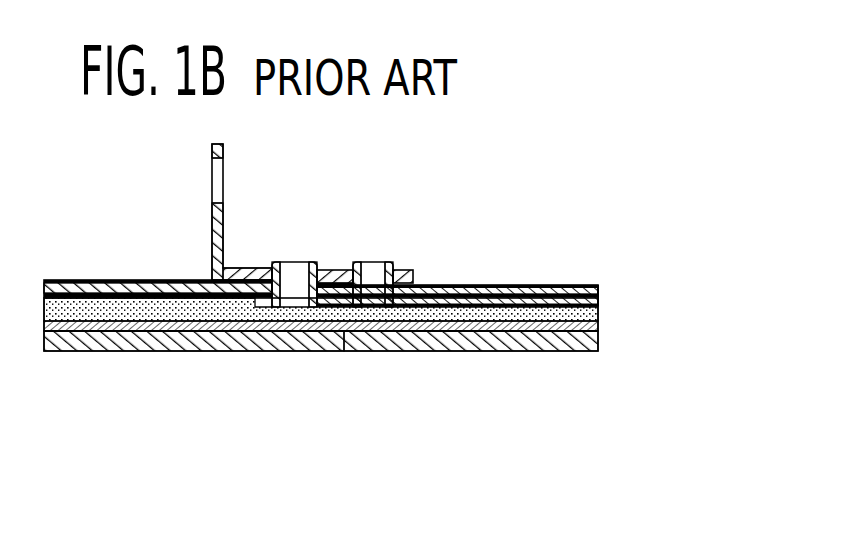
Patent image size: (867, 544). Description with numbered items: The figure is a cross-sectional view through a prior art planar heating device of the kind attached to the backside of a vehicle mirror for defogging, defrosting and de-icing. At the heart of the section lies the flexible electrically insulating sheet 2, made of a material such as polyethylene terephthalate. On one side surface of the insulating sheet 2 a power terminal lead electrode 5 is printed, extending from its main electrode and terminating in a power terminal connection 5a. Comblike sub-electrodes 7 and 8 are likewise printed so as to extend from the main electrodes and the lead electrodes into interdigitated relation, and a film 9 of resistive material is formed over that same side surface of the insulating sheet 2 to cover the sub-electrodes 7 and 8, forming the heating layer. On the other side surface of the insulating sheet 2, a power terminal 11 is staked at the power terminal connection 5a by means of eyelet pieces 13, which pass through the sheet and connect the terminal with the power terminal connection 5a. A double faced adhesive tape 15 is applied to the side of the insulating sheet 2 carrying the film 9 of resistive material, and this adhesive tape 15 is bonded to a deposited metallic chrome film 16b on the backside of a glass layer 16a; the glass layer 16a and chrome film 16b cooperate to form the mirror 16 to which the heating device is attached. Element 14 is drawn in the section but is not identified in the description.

The flexible electrically insulating sheet 2 is at (75, 281).
The power terminal lead electrode 5 is at (358, 398).
The power terminal connection 5a is at (321, 361).
The comblike sub-electrode 7 is at (510, 285).
The comblike sub-electrode 8 is at (545, 297).
The film of resistive material 9 is at (597, 302).
The power terminal 11 is at (212, 228).
The eyelet piece 13 is at (390, 263).
The flexible board 14 is at (462, 252).
The double faced adhesive tape 15 is at (598, 315).
The base plate 16 is at (321, 415).
The glass layer 16a is at (340, 352).
The deposited metallic chrome film 16b is at (471, 388).